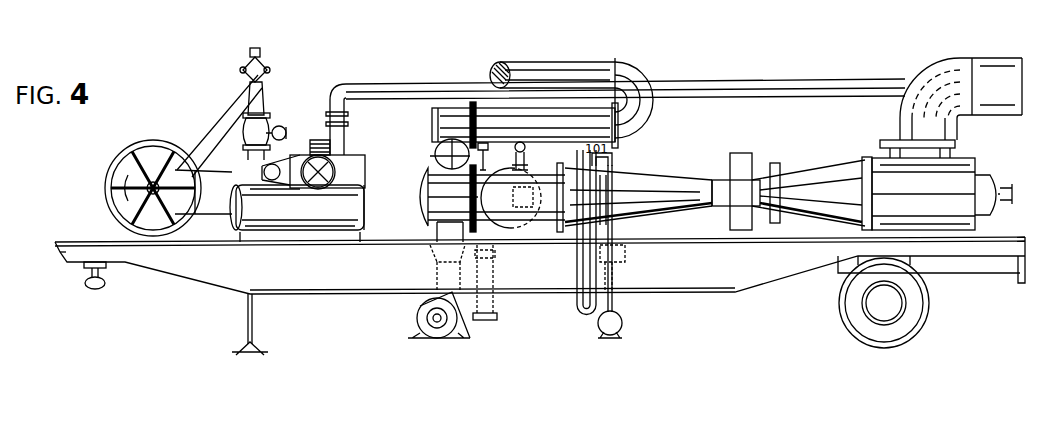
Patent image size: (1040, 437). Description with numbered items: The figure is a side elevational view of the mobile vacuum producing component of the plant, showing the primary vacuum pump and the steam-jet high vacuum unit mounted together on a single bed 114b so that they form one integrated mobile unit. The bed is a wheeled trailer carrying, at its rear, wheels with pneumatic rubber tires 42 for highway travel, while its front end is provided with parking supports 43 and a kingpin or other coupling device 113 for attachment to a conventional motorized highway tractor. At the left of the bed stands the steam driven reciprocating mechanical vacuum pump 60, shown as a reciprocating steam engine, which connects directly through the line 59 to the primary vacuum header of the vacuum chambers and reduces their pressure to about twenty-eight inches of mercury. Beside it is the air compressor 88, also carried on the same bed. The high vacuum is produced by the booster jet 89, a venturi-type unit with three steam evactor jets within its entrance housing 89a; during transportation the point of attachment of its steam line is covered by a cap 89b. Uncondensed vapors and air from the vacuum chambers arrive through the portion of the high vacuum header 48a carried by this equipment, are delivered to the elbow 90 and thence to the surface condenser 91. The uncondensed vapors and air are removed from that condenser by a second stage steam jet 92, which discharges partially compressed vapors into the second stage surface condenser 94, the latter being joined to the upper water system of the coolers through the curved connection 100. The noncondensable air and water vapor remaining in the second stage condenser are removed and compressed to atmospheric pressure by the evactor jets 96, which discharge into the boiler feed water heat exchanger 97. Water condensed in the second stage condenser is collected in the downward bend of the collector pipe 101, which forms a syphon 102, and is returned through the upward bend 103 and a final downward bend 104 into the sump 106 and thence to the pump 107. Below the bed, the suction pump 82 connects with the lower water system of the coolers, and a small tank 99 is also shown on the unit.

The pneumatic rubber tires 42 is at (926, 318).
The parking supports 43 is at (252, 326).
The high vacuum header portion 48a is at (957, 62).
The primary vacuum header line 59 is at (737, 80).
The mechanical vacuum pump 60 is at (366, 160).
The suction pump 82 is at (417, 318).
The air compressor 88 is at (366, 201).
The booster jet 89 is at (818, 172).
The entrance housing 89a is at (955, 166).
The cap 89b is at (992, 212).
The elbow 90 is at (526, 228).
The surface condenser 91 is at (672, 176).
The second stage steam jet 92 is at (528, 152).
The second stage surface condenser 94 is at (478, 108).
The evactor jets 96 is at (478, 173).
The boiler feed water heat exchanger 97 is at (497, 315).
The fuel tank 99 is at (433, 154).
The curved connection 100 is at (533, 64).
The collector pipe 101 is at (263, 130).
The syphon 102 is at (584, 312).
The upward bend 103 is at (614, 157).
The final downward bend 104 is at (616, 193).
The sump 106 is at (626, 252).
The pump 107 is at (622, 325).
The kingpin coupling device 113 is at (92, 290).
The single bed 114b is at (225, 278).